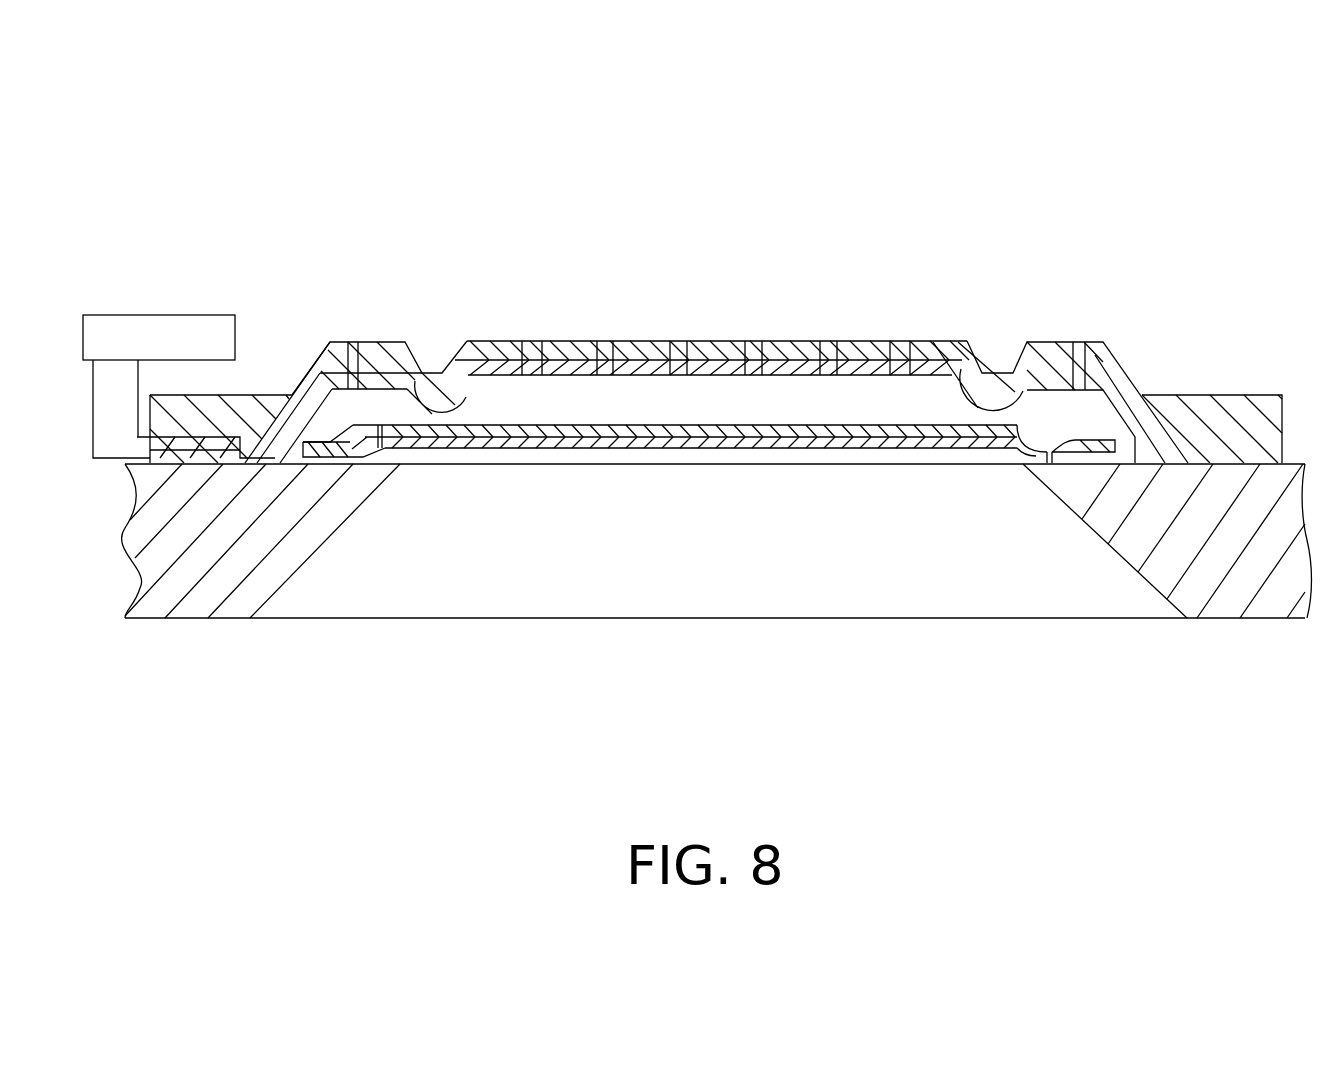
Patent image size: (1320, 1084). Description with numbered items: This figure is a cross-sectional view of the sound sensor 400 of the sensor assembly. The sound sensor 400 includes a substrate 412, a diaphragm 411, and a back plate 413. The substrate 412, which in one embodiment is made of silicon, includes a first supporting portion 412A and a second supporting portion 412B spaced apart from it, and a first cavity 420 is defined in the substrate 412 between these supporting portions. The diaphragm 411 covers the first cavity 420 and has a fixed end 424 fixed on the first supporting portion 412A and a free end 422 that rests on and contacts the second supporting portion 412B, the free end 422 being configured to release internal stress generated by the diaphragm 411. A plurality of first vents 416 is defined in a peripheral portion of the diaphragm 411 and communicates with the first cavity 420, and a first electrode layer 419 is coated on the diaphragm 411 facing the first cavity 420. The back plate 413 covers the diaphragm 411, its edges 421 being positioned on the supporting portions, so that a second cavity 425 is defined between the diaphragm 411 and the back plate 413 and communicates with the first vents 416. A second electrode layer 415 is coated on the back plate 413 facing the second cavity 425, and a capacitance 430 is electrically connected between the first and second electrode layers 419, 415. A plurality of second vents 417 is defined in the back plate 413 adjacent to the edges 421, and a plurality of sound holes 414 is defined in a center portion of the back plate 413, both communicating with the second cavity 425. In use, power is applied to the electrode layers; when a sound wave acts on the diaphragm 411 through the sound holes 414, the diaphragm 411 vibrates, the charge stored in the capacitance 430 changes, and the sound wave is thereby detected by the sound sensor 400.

The sound sensor 400 is at (495, 158).
The diaphragm 411 is at (608, 430).
The substrate 412 is at (1130, 726).
The first supporting portion 412A is at (296, 552).
The second supporting portion 412B is at (1152, 550).
The back plate 413 is at (932, 350).
The sound holes 414 is at (540, 342).
The second electrode layer 415 is at (722, 342).
The first vents 416 is at (393, 450).
The second vents 417 is at (352, 342).
The first electrode layer 419 is at (608, 445).
The first cavity 420 is at (770, 570).
The edges 421 is at (270, 392).
The free end 422 is at (1083, 452).
The fixed end 424 is at (327, 450).
The second cavity 425 is at (830, 398).
The capacitance 430 is at (140, 312).